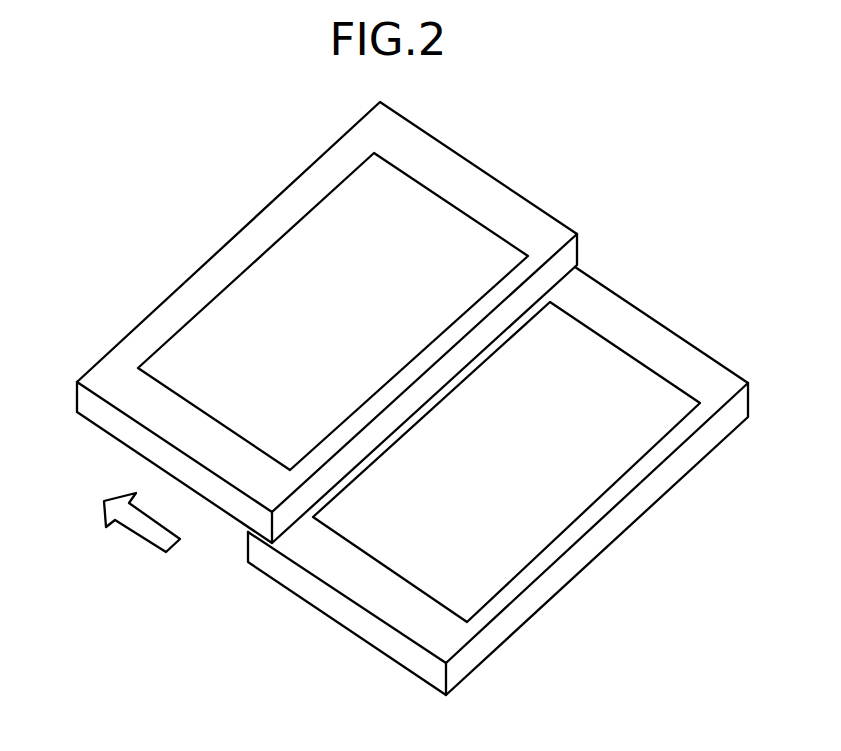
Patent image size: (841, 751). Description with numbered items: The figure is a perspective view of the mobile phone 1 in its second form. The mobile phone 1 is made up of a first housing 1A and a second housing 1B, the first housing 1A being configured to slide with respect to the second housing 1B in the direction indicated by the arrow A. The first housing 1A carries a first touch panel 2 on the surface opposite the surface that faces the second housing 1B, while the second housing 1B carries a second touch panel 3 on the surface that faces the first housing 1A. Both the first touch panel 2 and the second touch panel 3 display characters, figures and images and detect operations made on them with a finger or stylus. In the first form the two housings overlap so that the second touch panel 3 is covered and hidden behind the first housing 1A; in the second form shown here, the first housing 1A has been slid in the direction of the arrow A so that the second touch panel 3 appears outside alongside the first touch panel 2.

The mobile phone 1 is at (628, 147).
The first housing 1A is at (475, 196).
The second housing 1B is at (644, 333).
The first touch panel 2 is at (292, 275).
The second touch panel 3 is at (570, 488).
The arrow A is at (140, 538).